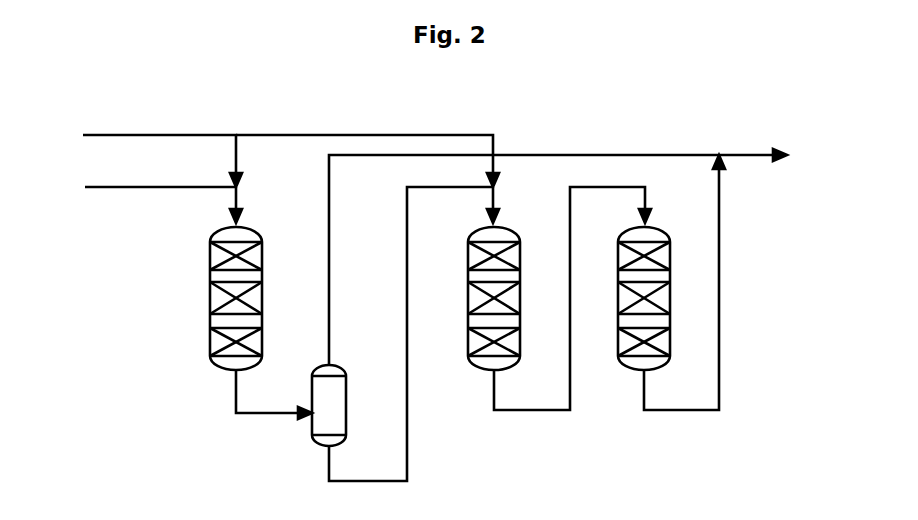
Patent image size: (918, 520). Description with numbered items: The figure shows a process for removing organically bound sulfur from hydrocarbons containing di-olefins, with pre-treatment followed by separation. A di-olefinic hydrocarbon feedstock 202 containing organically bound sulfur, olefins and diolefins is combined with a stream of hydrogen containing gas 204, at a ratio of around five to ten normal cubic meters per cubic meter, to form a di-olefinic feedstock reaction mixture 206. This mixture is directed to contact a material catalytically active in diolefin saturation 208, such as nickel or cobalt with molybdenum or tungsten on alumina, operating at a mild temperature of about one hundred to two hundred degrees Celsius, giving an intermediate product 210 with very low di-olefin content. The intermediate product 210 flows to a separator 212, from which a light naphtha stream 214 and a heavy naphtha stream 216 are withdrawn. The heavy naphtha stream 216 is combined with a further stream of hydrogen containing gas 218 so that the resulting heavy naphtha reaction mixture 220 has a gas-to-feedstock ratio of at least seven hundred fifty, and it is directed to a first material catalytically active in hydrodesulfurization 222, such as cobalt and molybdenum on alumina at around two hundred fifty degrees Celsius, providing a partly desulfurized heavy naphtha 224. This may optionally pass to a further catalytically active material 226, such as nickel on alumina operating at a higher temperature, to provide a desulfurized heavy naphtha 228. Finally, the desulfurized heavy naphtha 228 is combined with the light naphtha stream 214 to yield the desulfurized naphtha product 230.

The hydrogen containing gas 204 is at (158, 133).
The di-olefinic hydrocarbon feedstock 202 is at (158, 186).
The di-olefinic feedstock reaction mixture 206 is at (239, 192).
The material catalytically active in diolefin saturation 208 is at (263, 236).
The hydrogen containing gas 218 is at (322, 135).
The heavy naphtha reaction mixture 220 is at (494, 197).
The first material catalytically active in hydrodesulfurization 222 is at (500, 228).
The intermediate product 210 is at (284, 412).
The separator 212 is at (347, 418).
The light naphtha stream 214 is at (330, 302).
The heavy naphtha stream 216 is at (407, 467).
The partly desulfurized heavy naphtha 224 is at (505, 409).
The further catalytically active material 226 is at (651, 228).
The desulfurized heavy naphtha 228 is at (720, 284).
The desulfurized naphtha product 230 is at (732, 155).